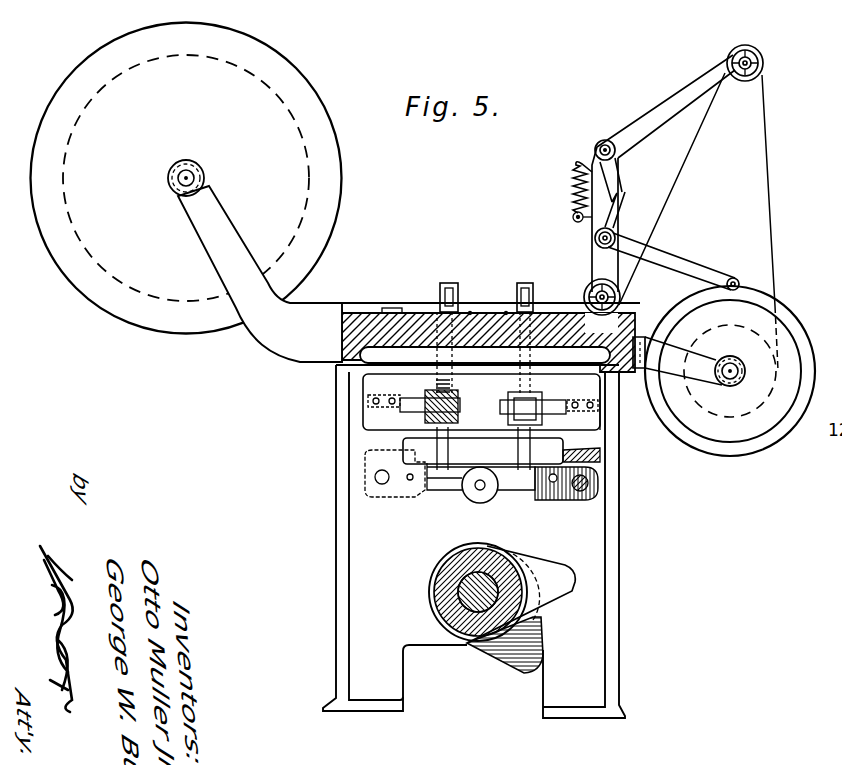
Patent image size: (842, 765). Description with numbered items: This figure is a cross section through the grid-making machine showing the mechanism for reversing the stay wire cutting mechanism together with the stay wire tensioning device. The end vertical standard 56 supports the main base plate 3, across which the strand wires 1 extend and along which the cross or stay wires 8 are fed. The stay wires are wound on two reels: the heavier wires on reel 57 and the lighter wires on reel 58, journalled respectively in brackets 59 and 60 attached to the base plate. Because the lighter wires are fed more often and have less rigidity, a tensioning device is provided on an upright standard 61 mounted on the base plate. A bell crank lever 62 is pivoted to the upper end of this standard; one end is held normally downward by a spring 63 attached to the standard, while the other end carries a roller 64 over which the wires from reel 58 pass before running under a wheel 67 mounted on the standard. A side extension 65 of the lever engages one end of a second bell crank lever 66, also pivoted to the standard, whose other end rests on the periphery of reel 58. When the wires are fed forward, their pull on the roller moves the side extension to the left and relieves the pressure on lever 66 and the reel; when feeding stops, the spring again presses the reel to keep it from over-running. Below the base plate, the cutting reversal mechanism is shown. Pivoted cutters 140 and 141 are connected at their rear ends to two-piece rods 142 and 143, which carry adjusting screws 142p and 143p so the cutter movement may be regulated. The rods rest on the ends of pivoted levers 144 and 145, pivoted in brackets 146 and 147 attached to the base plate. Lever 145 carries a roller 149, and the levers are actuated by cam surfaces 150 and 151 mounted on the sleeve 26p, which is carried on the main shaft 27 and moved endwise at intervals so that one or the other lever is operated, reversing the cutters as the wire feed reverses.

The strand wires 1 is at (471, 310).
The base plate 3 is at (382, 320).
The stay wires 8 is at (368, 307).
The end vertical standard 56 is at (592, 656).
The reel 57 is at (186, 178).
The reel 58 is at (730, 371).
The bracket 59 is at (268, 347).
The bracket 60 is at (647, 337).
The upright standard 61 is at (592, 263).
The bell crank lever 62 is at (682, 100).
The spring 63 is at (572, 192).
The roller 64 is at (766, 62).
The side extension 65 is at (612, 176).
The bell crank lever 66 is at (682, 268).
The wheel 67 is at (585, 294).
The pivoted cutter 140 is at (453, 275).
The pivoted cutter 141 is at (525, 283).
The two-piece rod 142 is at (440, 453).
The adjusting screw 142p is at (458, 412).
The two-piece rod 143 is at (597, 468).
The adjusting screw 143p is at (540, 418).
The pivoted lever 144 is at (548, 498).
The pivoted lever 145 is at (442, 490).
The bracket 146 is at (590, 432).
The bracket 147 is at (375, 418).
The roller 149 is at (478, 503).
The cam surface 150 is at (535, 646).
The cam surface 151 is at (540, 576).
The sleeve 26p is at (448, 588).
The main shaft 27 is at (478, 608).